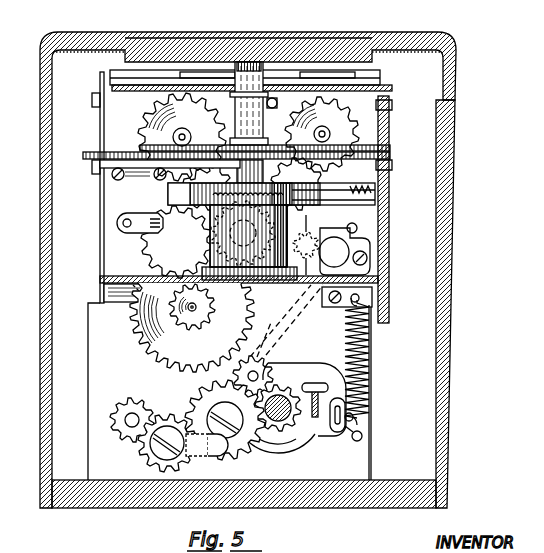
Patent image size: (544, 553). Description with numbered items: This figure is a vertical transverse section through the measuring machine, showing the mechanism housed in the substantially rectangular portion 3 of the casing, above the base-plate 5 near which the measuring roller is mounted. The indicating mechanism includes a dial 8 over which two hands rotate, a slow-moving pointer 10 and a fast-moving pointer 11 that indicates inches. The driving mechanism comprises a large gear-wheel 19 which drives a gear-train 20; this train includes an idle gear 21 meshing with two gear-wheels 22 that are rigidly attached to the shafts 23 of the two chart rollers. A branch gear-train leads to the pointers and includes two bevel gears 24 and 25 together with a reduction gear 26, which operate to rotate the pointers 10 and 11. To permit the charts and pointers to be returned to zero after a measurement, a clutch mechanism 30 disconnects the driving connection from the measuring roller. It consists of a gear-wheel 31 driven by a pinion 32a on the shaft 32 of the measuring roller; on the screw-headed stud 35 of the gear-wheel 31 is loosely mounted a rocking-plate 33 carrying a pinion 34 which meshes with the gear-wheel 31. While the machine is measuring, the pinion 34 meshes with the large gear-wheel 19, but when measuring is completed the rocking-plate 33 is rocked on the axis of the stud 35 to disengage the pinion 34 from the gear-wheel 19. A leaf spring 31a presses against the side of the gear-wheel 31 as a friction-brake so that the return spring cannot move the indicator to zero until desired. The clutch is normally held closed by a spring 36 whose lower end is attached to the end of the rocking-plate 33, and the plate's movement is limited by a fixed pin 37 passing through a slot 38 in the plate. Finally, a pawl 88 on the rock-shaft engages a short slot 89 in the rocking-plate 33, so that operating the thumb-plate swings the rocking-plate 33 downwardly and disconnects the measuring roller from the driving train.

The rectangular portion 3 is at (461, 216).
The base-plate 5 is at (363, 509).
The dial 8 is at (386, 86).
The slow-moving pointer 10 is at (310, 75).
The fast-moving pointer 11 is at (175, 72).
The large gear-wheel 19 is at (192, 310).
The gear-train 20 is at (296, 223).
The idle gear 21 is at (246, 122).
The gear-wheels 22 is at (248, 137).
The shafts 23 is at (332, 141).
The bevel gear 24 is at (213, 230).
The bevel gear 25 is at (306, 245).
The reduction gear 26 is at (104, 149).
The clutch mechanism 30 is at (303, 361).
The gear-wheel 31 is at (187, 406).
The leaf spring 31a is at (176, 447).
The shaft of the measuring roller 32 is at (298, 447).
The pinion 32a is at (277, 450).
The rocking-plate 33 is at (272, 372).
The pinion 34 is at (296, 353).
The screw-headed stud 35 is at (216, 456).
The spring 36 is at (362, 354).
The fixed pin 37 is at (352, 418).
The slot 38 is at (337, 443).
The pawl 88 is at (371, 395).
The short slot 89 is at (345, 327).